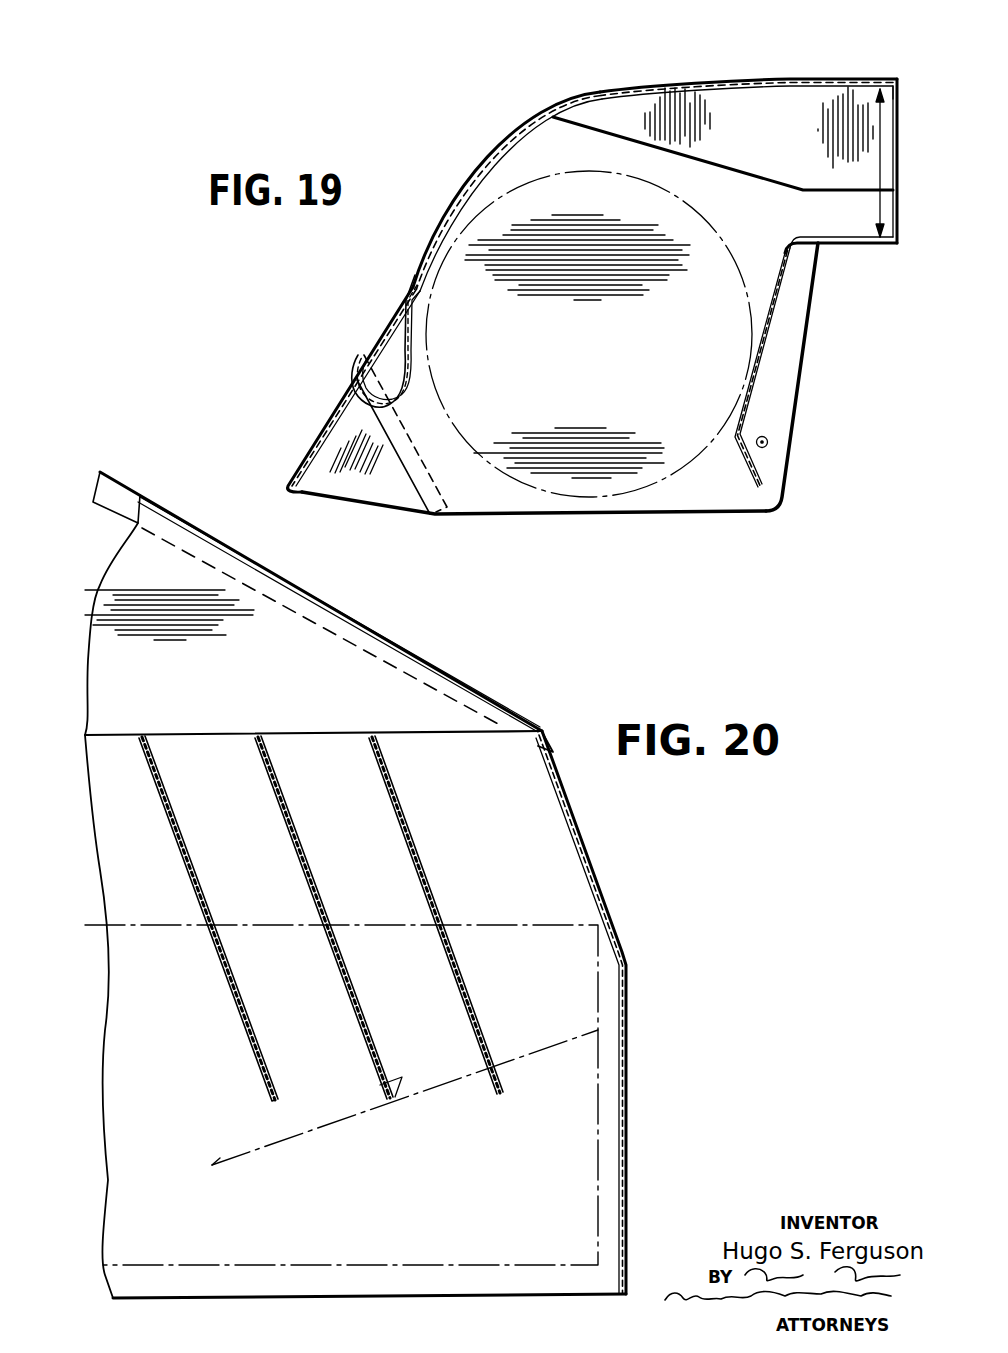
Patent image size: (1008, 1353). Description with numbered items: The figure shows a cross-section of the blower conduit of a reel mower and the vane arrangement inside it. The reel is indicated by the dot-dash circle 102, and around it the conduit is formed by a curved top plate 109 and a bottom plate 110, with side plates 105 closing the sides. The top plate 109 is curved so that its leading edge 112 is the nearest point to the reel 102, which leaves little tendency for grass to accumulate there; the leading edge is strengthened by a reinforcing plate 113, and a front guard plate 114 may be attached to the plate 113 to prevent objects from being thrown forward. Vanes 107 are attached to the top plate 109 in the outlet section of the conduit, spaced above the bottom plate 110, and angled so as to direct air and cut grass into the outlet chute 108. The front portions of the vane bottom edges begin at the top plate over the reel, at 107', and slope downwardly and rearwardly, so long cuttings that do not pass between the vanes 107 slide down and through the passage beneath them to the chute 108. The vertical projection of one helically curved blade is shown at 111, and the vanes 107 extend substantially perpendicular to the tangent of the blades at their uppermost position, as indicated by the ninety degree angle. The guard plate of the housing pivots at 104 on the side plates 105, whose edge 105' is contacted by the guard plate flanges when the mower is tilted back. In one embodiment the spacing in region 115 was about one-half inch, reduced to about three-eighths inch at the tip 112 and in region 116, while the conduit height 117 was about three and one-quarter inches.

In FIG. 19, the reel 102 is at (455, 242).
In FIG. 20, the reel 102 is at (525, 925).
In FIG. 19, the pivot 104 is at (768, 443).
In FIG. 19, the side plates 105 is at (582, 440).
In FIG. 19, the edge 105' is at (823, 377).
In FIG. 19, the vanes 107 is at (771, 145).
In FIG. 20, the vanes 107 is at (321, 918).
In FIG. 19, the front portion of vane bottom edges 107' is at (710, 153).
In FIG. 20, the outlet chute 108 is at (352, 667).
In FIG. 19, the top plate 109 is at (718, 80).
In FIG. 19, the bottom plate 110 is at (858, 244).
In FIG. 20, the vertical projection of one blade 111 is at (583, 1030).
In FIG. 19, the leading edge 112 is at (418, 387).
In FIG. 19, the reinforcing plate 113 is at (380, 322).
In FIG. 19, the front guard plate 114 is at (323, 422).
In FIG. 19, the spacing region 115 is at (420, 320).
In FIG. 19, the spacing region 116 is at (737, 417).
In FIG. 19, the conduit height 117 is at (880, 160).